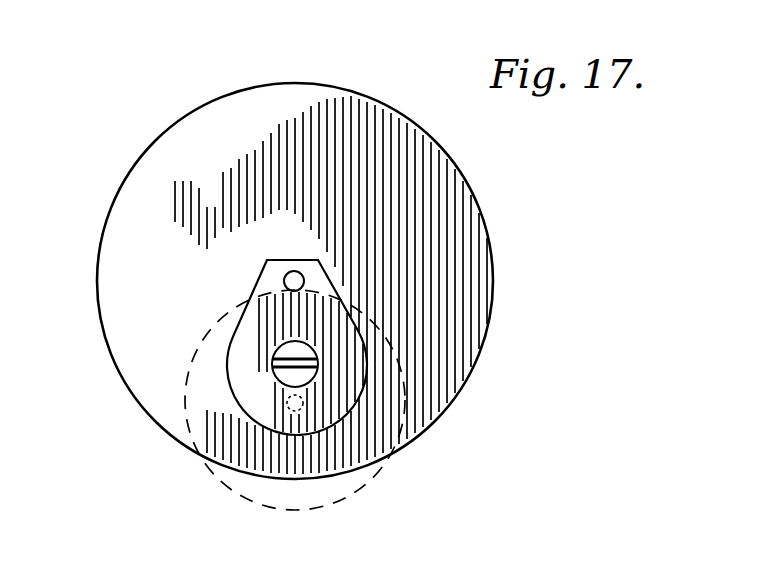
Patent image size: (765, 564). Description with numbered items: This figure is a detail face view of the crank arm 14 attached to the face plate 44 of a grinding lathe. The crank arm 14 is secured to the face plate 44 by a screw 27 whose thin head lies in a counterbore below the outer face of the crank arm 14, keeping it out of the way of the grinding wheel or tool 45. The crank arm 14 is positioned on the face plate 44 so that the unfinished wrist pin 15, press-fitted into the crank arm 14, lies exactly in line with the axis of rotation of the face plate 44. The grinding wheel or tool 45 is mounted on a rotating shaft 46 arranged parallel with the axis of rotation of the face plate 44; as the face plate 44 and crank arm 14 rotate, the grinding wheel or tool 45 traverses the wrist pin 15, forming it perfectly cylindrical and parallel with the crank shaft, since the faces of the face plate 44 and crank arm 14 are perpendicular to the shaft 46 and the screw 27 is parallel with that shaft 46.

The face plate 44 is at (211, 113).
The grinding wheel or tool 45 is at (371, 481).
The crank arm 14 is at (237, 308).
The wrist pin 15 is at (284, 278).
The screw 27 is at (276, 376).
The rotating shaft 46 is at (287, 403).